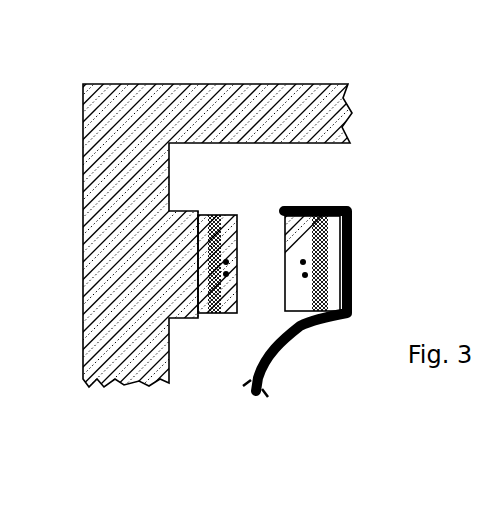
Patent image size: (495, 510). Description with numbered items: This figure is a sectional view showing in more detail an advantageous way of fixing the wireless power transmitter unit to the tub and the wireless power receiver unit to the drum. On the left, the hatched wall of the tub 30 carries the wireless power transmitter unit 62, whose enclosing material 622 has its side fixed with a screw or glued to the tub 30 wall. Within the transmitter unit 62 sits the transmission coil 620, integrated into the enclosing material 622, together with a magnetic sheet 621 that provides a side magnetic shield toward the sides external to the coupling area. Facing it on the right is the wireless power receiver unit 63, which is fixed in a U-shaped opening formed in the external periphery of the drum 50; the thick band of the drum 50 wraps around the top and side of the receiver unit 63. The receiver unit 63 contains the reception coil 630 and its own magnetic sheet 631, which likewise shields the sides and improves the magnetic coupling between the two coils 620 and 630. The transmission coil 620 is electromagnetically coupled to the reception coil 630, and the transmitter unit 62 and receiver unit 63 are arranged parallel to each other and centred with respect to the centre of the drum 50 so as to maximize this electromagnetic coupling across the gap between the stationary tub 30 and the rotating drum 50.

The tub 30 is at (134, 83).
The drum 50 is at (327, 207).
The wireless power transmitter unit 62 is at (215, 248).
The transmission coil 620 is at (229, 276).
The magnetic sheet 621 is at (208, 314).
The enclosing material 622 is at (183, 210).
The wireless power receiver unit 63 is at (247, 255).
The reception coil 630 is at (304, 279).
The magnetic sheet 631 is at (321, 314).